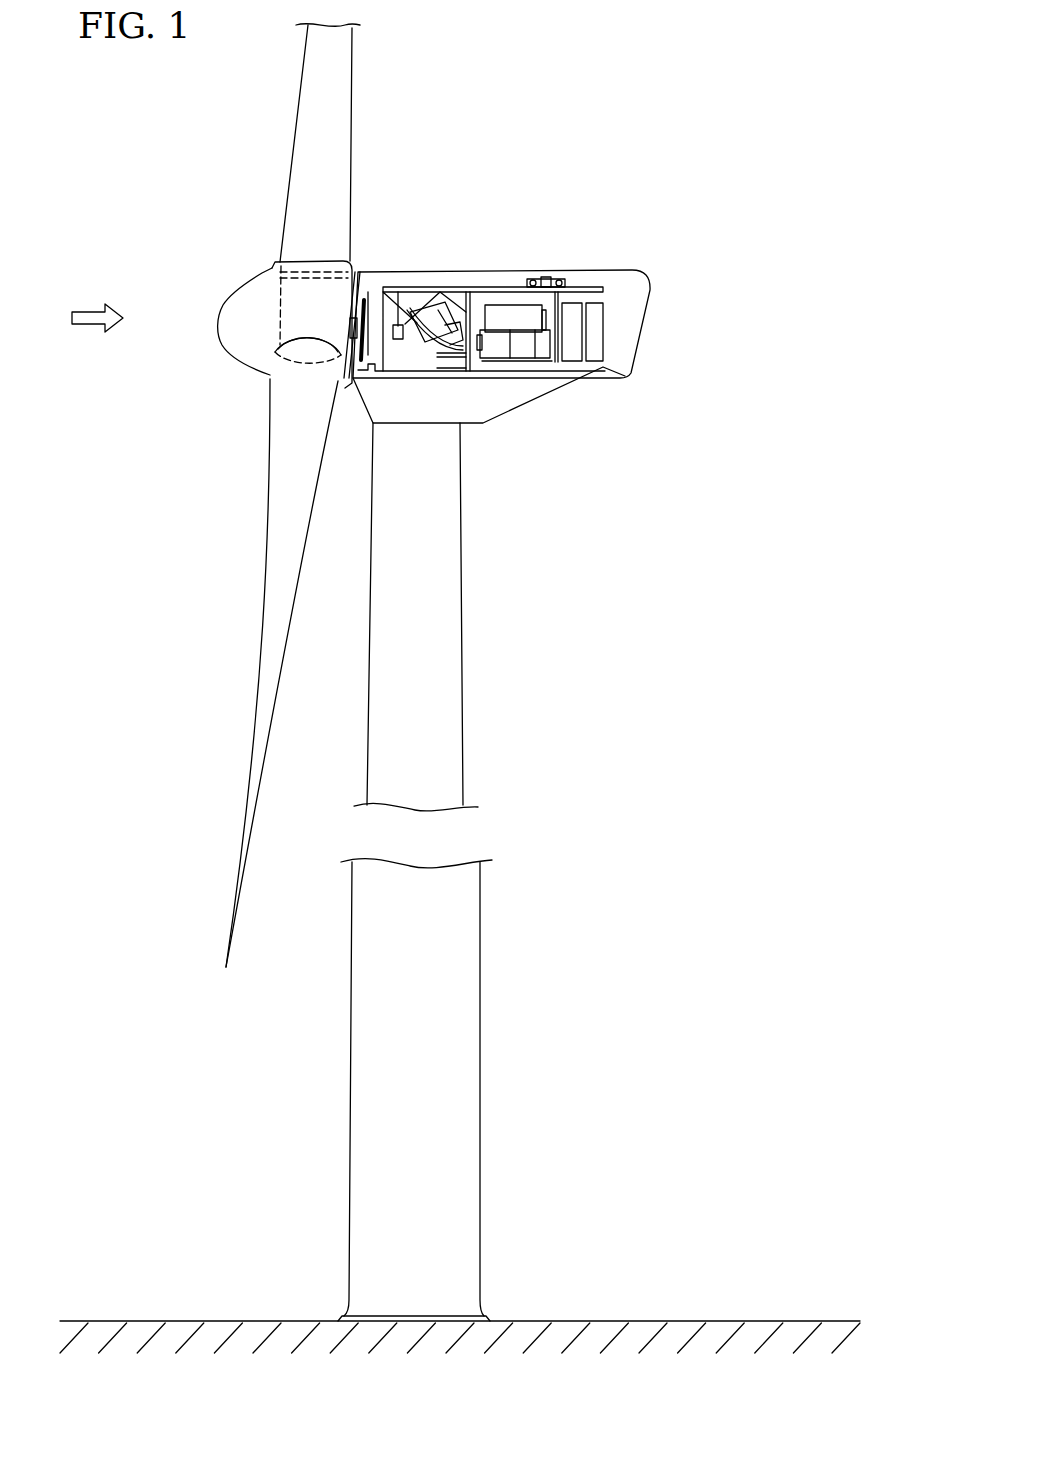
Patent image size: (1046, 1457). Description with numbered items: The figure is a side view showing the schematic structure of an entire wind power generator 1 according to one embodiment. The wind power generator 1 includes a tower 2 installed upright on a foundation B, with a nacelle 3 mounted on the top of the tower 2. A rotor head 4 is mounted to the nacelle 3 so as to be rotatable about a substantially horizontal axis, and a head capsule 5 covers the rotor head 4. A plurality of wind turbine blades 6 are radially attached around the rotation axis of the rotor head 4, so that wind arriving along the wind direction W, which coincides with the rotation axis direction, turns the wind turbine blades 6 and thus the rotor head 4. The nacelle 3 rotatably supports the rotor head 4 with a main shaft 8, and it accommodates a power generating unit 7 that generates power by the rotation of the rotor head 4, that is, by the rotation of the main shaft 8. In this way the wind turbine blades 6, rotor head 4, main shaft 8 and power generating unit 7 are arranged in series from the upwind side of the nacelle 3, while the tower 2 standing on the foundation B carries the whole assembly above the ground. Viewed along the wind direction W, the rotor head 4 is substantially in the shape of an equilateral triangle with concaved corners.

The wind power generator 1 is at (647, 127).
The tower 2 is at (475, 1008).
The nacelle 3 is at (648, 315).
The rotor head 4 is at (290, 307).
The head capsule 5 is at (237, 346).
The wind turbine blade 6 is at (298, 107).
The power generating unit 7 is at (512, 292).
The main shaft 8 is at (393, 335).
The wind direction W is at (88, 312).
The foundation B is at (340, 1320).